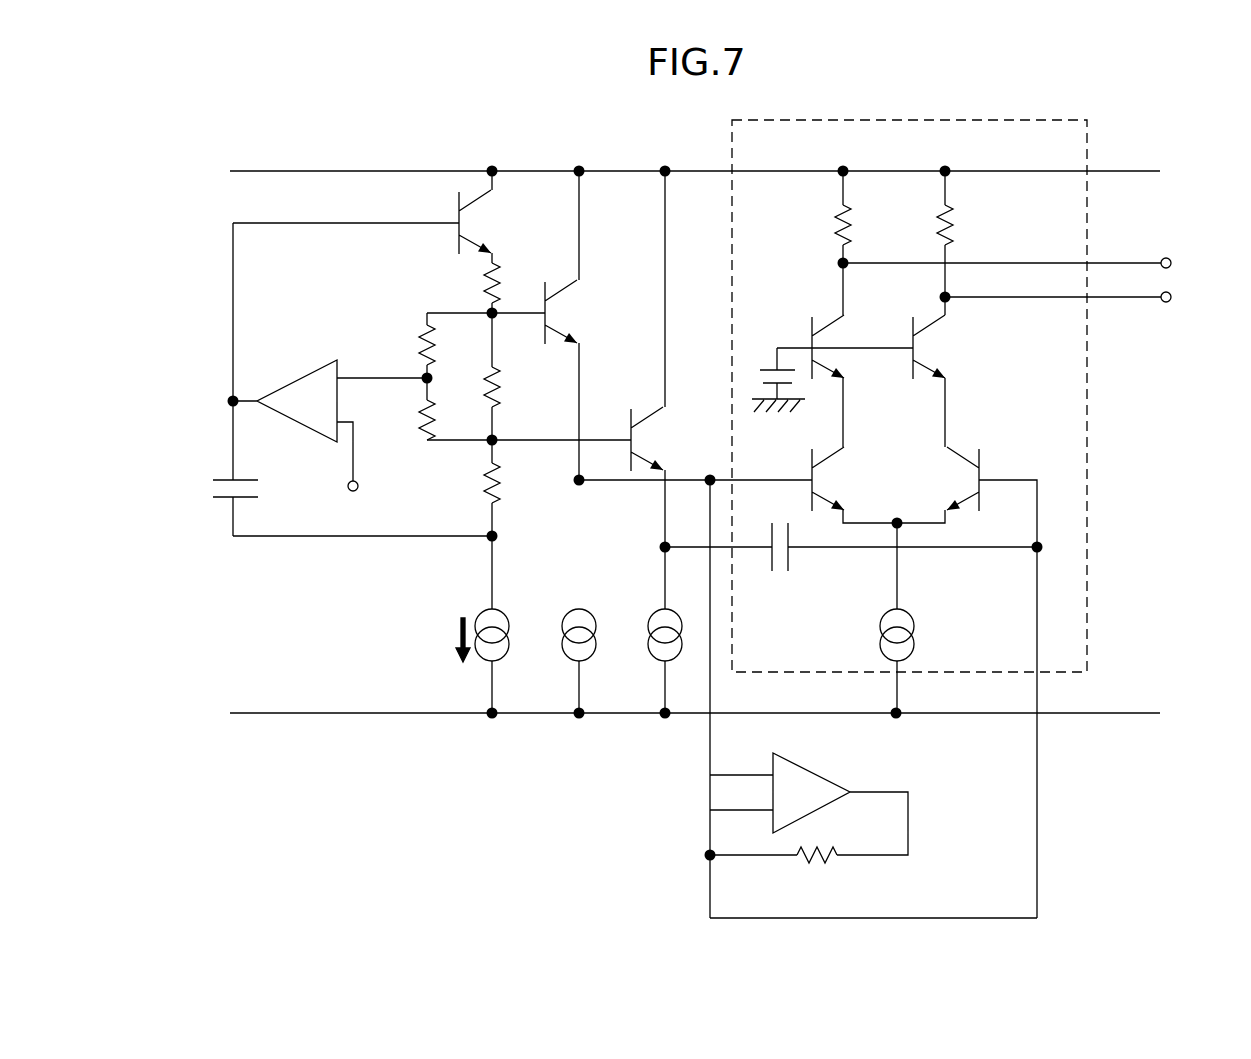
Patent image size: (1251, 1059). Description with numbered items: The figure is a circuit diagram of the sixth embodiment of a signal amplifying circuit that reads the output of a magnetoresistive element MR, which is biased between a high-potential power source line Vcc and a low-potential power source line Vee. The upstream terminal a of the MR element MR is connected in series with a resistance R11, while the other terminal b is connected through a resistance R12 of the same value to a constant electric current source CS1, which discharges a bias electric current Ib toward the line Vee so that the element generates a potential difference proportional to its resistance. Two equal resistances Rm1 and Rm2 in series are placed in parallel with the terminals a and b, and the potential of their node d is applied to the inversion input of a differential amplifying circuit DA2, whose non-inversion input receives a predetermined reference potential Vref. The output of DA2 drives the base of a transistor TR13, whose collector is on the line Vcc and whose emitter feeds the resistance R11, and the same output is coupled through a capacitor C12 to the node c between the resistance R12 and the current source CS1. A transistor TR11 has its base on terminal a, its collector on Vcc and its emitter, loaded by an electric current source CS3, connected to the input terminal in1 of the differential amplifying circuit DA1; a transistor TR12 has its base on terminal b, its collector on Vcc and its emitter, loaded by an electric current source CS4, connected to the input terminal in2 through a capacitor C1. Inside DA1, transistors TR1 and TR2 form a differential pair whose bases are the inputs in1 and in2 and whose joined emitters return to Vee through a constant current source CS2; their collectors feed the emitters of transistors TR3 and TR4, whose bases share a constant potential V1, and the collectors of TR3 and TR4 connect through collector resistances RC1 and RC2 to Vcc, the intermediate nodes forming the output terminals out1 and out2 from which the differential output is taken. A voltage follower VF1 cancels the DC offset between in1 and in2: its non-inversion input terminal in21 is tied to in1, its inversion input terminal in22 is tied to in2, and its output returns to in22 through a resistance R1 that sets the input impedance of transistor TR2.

The power source line at a high potential Vcc is at (671, 172).
The power source line at a low potential Vee is at (671, 713).
The transistor TR13 is at (381, 217).
The resistance R11 is at (465, 288).
The terminal a is at (486, 323).
The resistance Rm1 is at (398, 345).
The node d is at (396, 379).
The resistance Rm2 is at (427, 409).
The magnetoresistive element MR is at (514, 376).
The terminal b is at (548, 430).
The resistance R12 is at (465, 488).
The node c is at (365, 558).
The differential amplifying circuit DA2 is at (291, 352).
The reference potential Vref is at (351, 500).
The capacitor C12 is at (211, 505).
The transistor TR11 is at (576, 325).
The transistor TR12 is at (663, 390).
The constant electric current source CS1 is at (472, 649).
The bias electric current Ib is at (447, 640).
The electric current source CS3 is at (558, 594).
The electric current source CS4 is at (643, 628).
The input terminal in1 is at (695, 468).
The input terminal in2 is at (1011, 684).
The differential amplifying circuit DA1 is at (946, 402).
The collector resistance RC1 is at (814, 243).
The collector resistance RC2 is at (969, 243).
The output terminal out1 is at (1035, 263).
The output terminal out2 is at (1086, 297).
The transistor TR3 is at (843, 381).
The transistor TR4 is at (888, 381).
The constant potential V1 is at (782, 366).
The transistor TR1 is at (854, 485).
The transistor TR2 is at (938, 485).
The constant electric current source CS2 is at (923, 616).
The capacitor C1 is at (851, 560).
The non-inversion input terminal in21 is at (716, 699).
The inversion input terminal in22 is at (716, 806).
The voltage follower VF1 is at (840, 804).
The resistance R1 is at (871, 882).